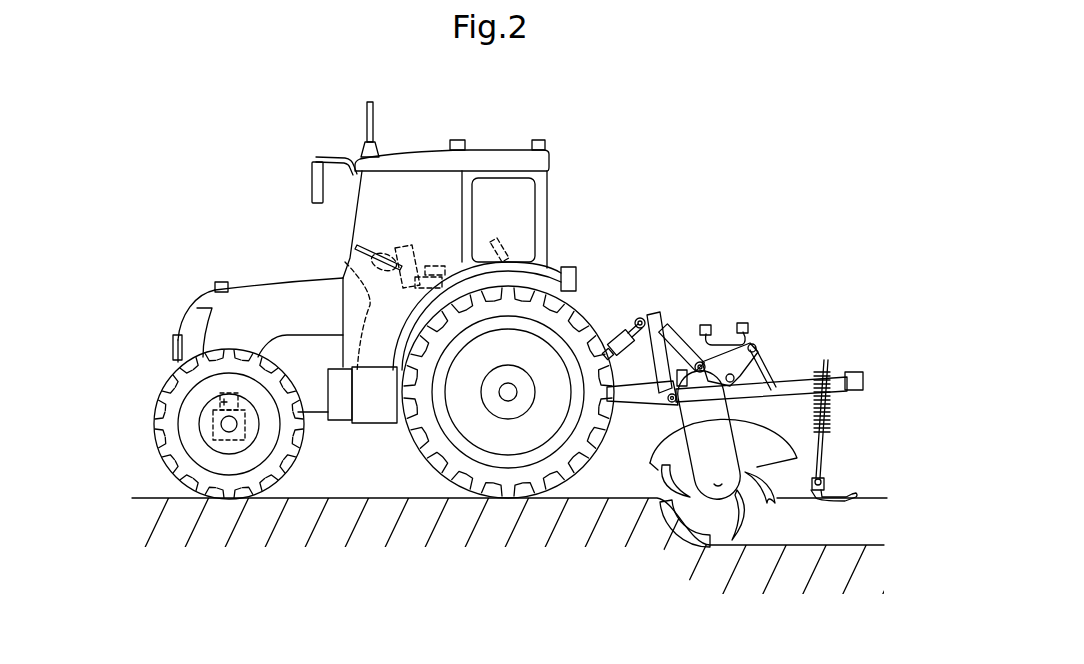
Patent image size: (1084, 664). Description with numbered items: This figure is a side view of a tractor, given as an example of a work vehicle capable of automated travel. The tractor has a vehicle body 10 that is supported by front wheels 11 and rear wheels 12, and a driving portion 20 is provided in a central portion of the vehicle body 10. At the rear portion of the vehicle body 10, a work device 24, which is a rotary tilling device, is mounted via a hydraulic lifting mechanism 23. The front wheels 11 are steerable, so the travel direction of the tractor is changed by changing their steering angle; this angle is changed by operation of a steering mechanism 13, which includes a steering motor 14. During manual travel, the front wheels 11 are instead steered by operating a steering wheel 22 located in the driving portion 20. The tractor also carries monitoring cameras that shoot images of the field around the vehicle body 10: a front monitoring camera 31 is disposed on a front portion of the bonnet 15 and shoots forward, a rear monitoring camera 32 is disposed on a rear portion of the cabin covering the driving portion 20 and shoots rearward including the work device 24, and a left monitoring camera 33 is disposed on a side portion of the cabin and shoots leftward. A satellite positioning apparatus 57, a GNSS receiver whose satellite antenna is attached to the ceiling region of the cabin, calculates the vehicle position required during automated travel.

The vehicle body 10 is at (350, 433).
The front wheels 11 is at (223, 500).
The rear wheels 12 is at (523, 500).
The steering mechanism 13 is at (213, 426).
The steering motor 14 is at (218, 395).
The bonnet 15 is at (293, 280).
The driving portion 20 is at (415, 213).
The steering wheel 22 is at (379, 254).
The hydraulic lifting mechanism 23 is at (669, 310).
The work device 24 is at (718, 530).
The front monitoring camera 31 is at (223, 282).
The rear monitoring camera 32 is at (540, 142).
The left monitoring camera 33 is at (460, 142).
The satellite positioning apparatus 57 is at (366, 120).